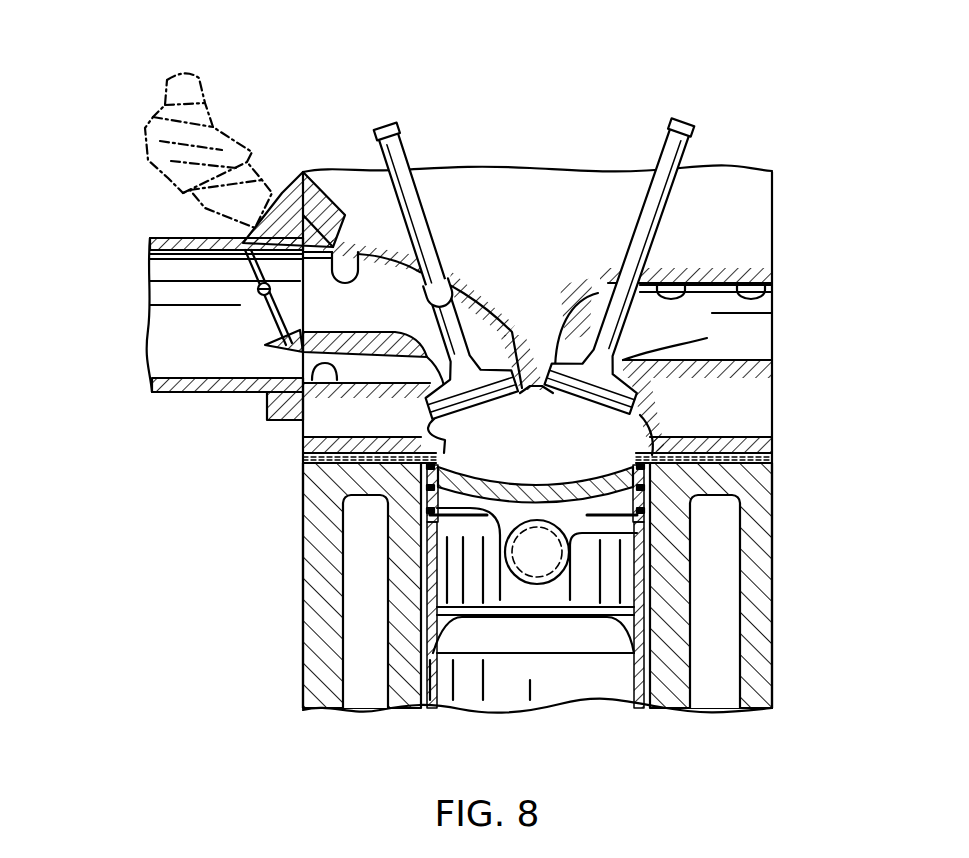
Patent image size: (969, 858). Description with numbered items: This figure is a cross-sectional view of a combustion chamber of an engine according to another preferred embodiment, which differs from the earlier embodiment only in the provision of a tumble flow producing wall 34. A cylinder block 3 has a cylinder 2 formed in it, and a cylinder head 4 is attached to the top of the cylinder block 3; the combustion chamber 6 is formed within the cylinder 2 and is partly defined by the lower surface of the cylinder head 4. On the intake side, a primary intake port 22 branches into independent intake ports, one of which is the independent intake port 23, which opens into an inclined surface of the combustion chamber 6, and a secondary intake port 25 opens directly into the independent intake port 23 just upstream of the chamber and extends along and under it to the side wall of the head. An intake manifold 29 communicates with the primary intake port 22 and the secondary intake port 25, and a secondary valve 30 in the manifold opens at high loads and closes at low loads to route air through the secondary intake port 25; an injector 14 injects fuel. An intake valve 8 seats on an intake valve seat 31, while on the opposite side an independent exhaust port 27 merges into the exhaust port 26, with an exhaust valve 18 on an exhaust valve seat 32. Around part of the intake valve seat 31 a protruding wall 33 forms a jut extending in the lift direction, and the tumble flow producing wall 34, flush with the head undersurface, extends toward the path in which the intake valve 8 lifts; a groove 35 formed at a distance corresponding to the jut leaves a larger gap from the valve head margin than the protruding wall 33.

The cylinder 2 is at (630, 700).
The cylinder block 3 is at (300, 593).
The cylinder head 4 is at (773, 260).
The combustion chamber 6 is at (645, 500).
The intake valve 8 is at (407, 157).
The injector 14 is at (152, 168).
The exhaust valve 18 is at (657, 162).
The primary intake port 22 is at (330, 268).
The independent intake port 23 is at (450, 272).
The secondary intake port 25 is at (297, 372).
The exhaust port 26 is at (773, 295).
The independent exhaust port 27 is at (693, 272).
The intake manifold 29 is at (170, 394).
The secondary valve 30 is at (245, 273).
The intake valve seat 31 is at (490, 332).
The exhaust valve seat 32 is at (685, 341).
The protruding wall 33 is at (527, 397).
The tumble flow producing wall 34 is at (447, 427).
The groove 35 is at (497, 500).